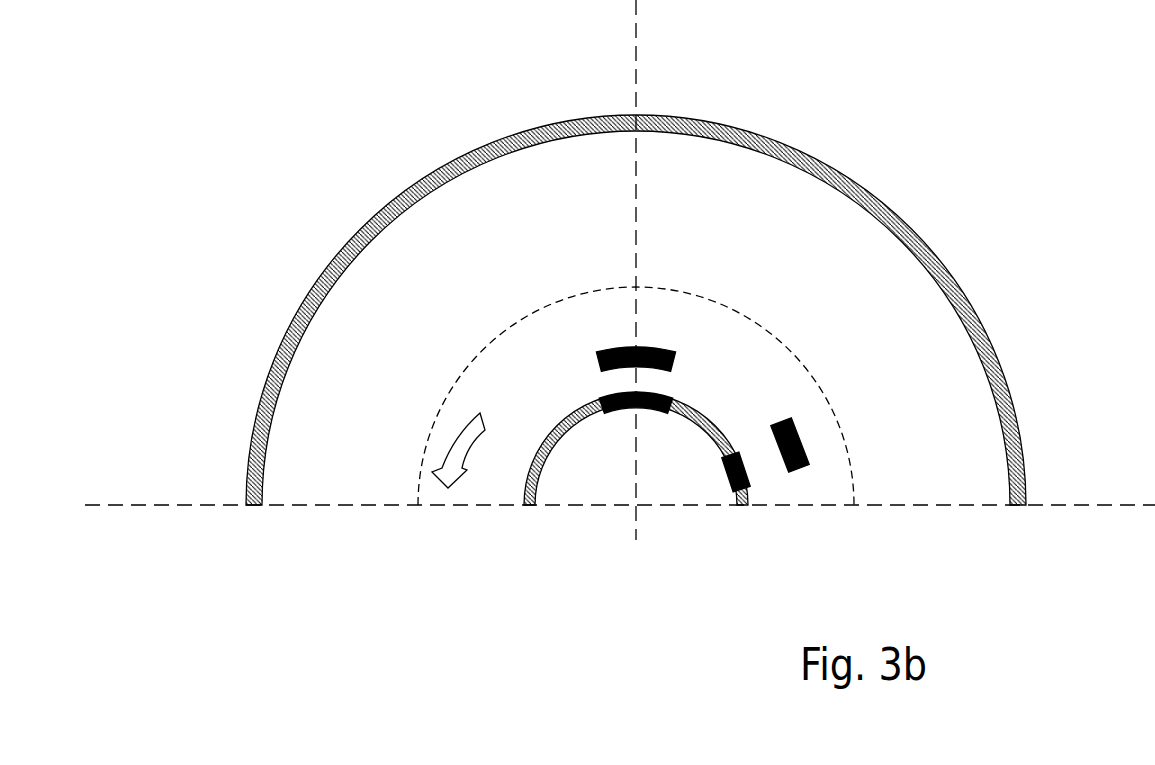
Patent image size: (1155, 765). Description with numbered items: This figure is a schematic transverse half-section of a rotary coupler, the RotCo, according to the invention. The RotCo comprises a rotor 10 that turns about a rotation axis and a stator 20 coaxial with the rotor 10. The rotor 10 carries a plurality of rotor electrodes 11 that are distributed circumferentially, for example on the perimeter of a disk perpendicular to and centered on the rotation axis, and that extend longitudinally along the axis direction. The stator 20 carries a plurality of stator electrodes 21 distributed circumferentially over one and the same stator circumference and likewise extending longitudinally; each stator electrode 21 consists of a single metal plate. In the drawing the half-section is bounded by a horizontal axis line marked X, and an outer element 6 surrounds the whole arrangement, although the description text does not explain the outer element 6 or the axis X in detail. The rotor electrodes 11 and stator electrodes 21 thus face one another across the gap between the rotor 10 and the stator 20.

The housing 6 is at (520, 133).
The rotor 10 is at (555, 340).
The rotor electrode 11 is at (654, 344).
The stator 20 is at (592, 483).
The stator electrode 21 is at (597, 398).
The axis of rotation X is at (131, 505).